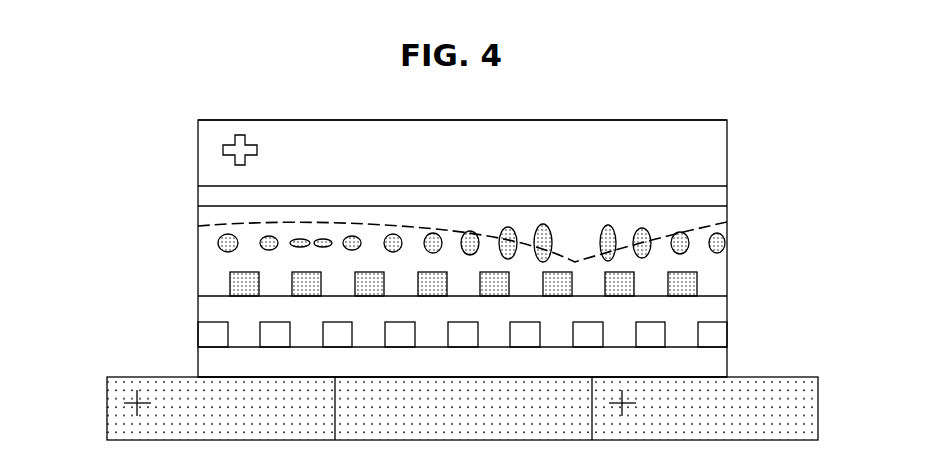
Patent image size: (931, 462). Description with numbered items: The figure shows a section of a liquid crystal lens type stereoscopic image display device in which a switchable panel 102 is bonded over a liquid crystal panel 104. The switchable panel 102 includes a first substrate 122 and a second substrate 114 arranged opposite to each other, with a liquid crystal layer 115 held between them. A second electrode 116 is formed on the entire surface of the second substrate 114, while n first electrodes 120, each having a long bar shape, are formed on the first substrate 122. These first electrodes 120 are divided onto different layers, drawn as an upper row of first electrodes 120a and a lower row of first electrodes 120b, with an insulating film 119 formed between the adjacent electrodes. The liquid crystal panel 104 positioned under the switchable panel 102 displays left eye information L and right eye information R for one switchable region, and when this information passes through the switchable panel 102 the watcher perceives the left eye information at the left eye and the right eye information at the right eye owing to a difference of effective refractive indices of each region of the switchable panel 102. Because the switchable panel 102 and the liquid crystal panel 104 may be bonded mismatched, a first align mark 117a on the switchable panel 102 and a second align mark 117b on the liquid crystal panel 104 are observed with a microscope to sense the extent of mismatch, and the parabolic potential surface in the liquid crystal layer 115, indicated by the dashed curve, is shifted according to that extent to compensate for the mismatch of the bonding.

The switchable panel 102 is at (146, 120).
The liquid crystal panel 104 is at (94, 378).
The second substrate 114 is at (727, 150).
The liquid crystal layer 115 is at (727, 218).
The second electrode 116 is at (727, 195).
The first align mark 117a is at (225, 150).
The second align mark 117b is at (128, 400).
The insulating film 119 is at (205, 310).
The first electrodes 120 is at (813, 270).
The first electrodes on one layer 120a is at (692, 283).
The first electrodes on another layer 120b is at (723, 332).
The first substrate 122 is at (727, 360).